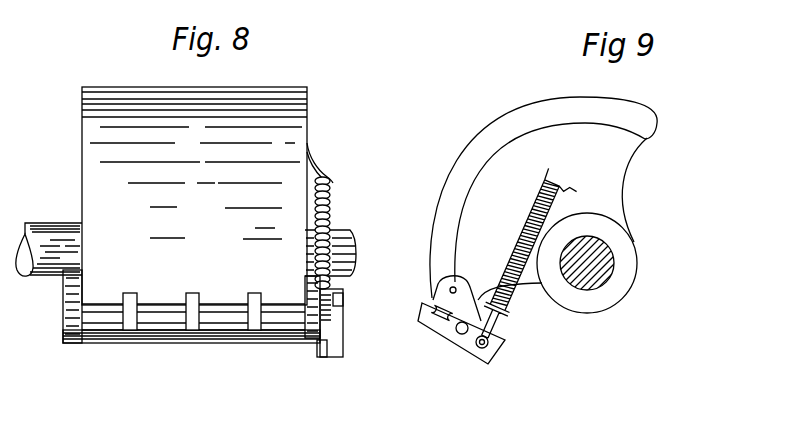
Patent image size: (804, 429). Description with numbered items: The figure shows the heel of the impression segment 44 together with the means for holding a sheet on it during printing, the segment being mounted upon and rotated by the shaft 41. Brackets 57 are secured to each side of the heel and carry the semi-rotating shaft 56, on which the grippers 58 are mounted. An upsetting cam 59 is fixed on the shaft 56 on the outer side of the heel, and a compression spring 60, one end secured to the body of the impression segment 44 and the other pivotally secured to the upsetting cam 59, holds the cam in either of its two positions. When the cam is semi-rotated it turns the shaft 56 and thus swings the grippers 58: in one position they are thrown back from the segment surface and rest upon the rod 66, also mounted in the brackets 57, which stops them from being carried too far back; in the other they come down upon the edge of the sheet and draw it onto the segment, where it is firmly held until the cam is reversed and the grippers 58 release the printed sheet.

In FIG. 8, the impression segment 44 is at (297, 113).
In FIG. 9, the impression segment 44 is at (622, 157).
In FIG. 8, the shaft 41 is at (355, 247).
In FIG. 9, the shaft 41 is at (612, 253).
In FIG. 8, the compression spring 60 is at (328, 211).
In FIG. 9, the compression spring 60 is at (510, 293).
In FIG. 8, the brackets 57 is at (67, 343).
In FIG. 9, the brackets 57 is at (440, 283).
In FIG. 8, the grippers 58 is at (121, 335).
In FIG. 8, the upsetting cam 59 is at (338, 322).
In FIG. 9, the upsetting cam 59 is at (437, 323).
In FIG. 8, the semi-rotating shaft 56 is at (280, 333).
In FIG. 9, the semi-rotating shaft 56 is at (462, 334).
In FIG. 8, the rod 66 is at (153, 342).